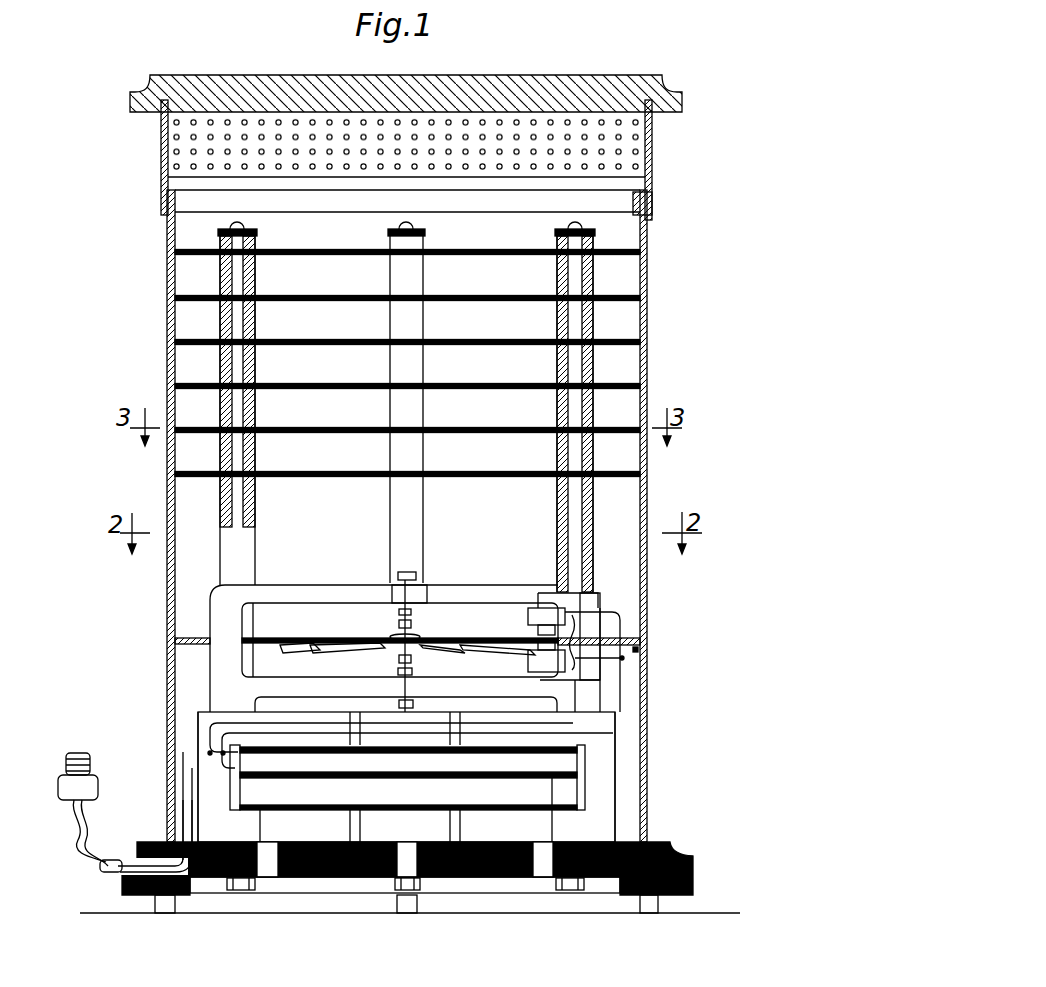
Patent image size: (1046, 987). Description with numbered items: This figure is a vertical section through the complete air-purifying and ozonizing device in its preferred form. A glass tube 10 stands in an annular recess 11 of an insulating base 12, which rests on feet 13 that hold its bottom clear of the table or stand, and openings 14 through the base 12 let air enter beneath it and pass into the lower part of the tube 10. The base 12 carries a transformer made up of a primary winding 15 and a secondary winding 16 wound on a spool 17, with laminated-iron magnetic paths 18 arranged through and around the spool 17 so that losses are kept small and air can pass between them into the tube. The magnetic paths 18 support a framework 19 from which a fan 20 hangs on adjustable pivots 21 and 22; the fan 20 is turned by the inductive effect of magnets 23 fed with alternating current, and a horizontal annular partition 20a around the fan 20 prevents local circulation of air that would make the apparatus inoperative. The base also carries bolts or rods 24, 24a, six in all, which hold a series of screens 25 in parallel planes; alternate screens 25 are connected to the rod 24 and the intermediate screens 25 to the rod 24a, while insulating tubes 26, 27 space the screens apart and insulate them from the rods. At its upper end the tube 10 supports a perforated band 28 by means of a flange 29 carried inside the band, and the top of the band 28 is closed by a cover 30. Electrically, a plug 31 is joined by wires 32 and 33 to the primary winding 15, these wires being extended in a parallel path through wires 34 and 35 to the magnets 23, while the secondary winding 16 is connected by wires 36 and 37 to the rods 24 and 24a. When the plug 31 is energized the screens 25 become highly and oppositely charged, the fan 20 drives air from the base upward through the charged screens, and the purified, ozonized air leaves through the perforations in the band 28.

The glass tube 10 is at (648, 377).
The annular recess 11 is at (642, 839).
The insulating base 12 is at (694, 863).
The feet 13 is at (175, 918).
The openings 14 is at (272, 875).
The primary winding 15 is at (560, 764).
The secondary winding 16 is at (563, 792).
The spool 17 is at (575, 810).
The magnetic paths 18 is at (198, 723).
The framework 19 is at (214, 646).
The fan 20 is at (453, 640).
The horizontal annular partition 20a is at (641, 641).
The adjustable pivot 21 is at (418, 573).
The adjustable pivot 22 is at (414, 670).
The magnets 23 is at (530, 612).
The rod 24 is at (596, 284).
The rod 24a is at (232, 305).
The screens 25 is at (455, 252).
The insulating tube 26 is at (257, 266).
The insulating tube 27 is at (256, 323).
The perforated band 28 is at (650, 185).
The flange 29 is at (632, 206).
The cover 30 is at (618, 86).
The plug 31 is at (90, 768).
The wire 32 is at (182, 790).
The wire 33 is at (190, 832).
The wire 34 is at (593, 735).
The wire 35 is at (590, 702).
The wire 36 is at (553, 826).
The wire 37 is at (261, 832).